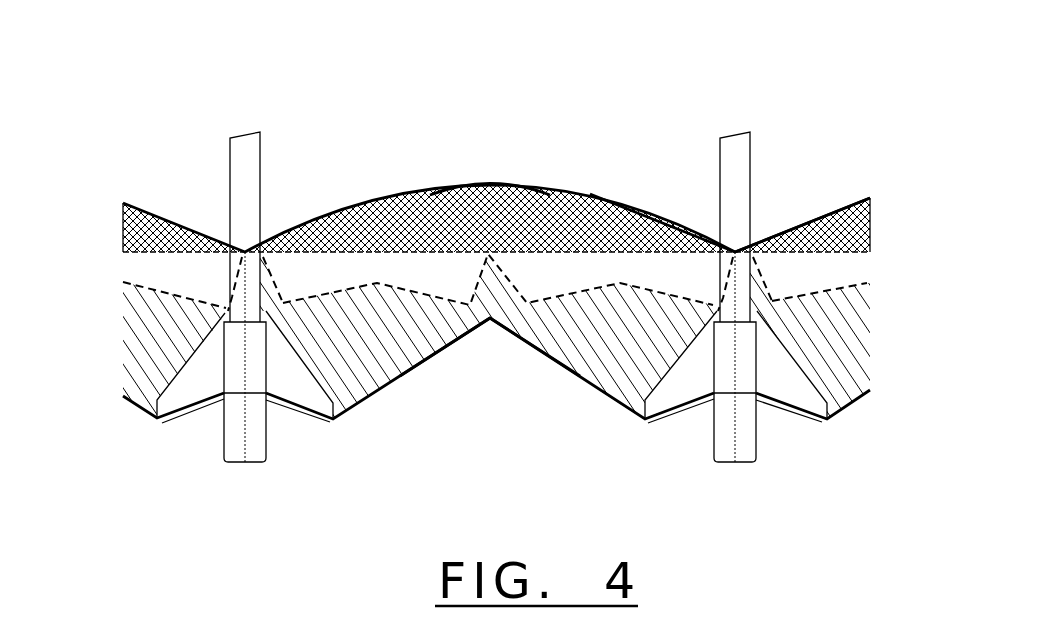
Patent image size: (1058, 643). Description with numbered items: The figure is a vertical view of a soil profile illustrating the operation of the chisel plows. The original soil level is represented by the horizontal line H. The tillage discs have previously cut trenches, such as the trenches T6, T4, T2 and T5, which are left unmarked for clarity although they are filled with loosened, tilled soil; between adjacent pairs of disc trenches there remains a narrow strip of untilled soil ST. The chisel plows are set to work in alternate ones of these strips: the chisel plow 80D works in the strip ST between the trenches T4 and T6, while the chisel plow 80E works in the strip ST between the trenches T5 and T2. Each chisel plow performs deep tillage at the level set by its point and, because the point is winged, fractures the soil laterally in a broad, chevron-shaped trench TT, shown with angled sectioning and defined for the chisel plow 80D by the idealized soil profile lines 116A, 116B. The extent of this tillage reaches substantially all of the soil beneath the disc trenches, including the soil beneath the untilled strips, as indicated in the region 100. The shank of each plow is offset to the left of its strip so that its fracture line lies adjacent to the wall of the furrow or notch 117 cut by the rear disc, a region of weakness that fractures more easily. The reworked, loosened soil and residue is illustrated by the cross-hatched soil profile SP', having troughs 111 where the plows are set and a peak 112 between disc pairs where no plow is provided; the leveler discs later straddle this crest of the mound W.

The mound W is at (435, 192).
The troughs 111 is at (281, 210).
The peak 112 is at (488, 185).
The soil profile SP' is at (662, 164).
The strip of untilled soil ST is at (796, 157).
The horizontal line H is at (865, 253).
The furrow or notch 117 is at (230, 203).
The trench T6 is at (225, 313).
The trench T4 is at (357, 380).
The trench T2 is at (598, 378).
The region 100 is at (487, 336).
The trench T5 is at (820, 315).
The chevron-shaped trench TT is at (850, 353).
The idealized soil profile line 116A is at (643, 414).
The idealized soil profile line 116B is at (833, 416).
The chisel plow 80D is at (243, 468).
The chisel plow 80E is at (737, 468).